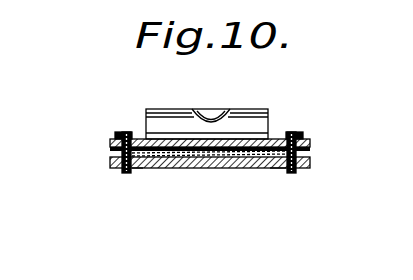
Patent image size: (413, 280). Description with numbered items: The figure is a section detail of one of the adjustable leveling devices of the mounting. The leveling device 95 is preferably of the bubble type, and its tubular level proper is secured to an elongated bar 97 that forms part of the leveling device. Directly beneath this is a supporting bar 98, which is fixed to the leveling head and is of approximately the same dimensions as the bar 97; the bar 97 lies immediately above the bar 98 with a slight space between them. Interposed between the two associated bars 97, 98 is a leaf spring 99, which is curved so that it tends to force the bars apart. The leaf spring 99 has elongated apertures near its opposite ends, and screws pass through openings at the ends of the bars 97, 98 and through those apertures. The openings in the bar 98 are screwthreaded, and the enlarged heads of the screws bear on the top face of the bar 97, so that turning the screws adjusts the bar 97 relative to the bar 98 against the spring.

The leveling device 95 is at (155, 123).
The elongated bar 97 is at (110, 142).
The bar 98 is at (115, 170).
The leaf spring 99 is at (231, 146).